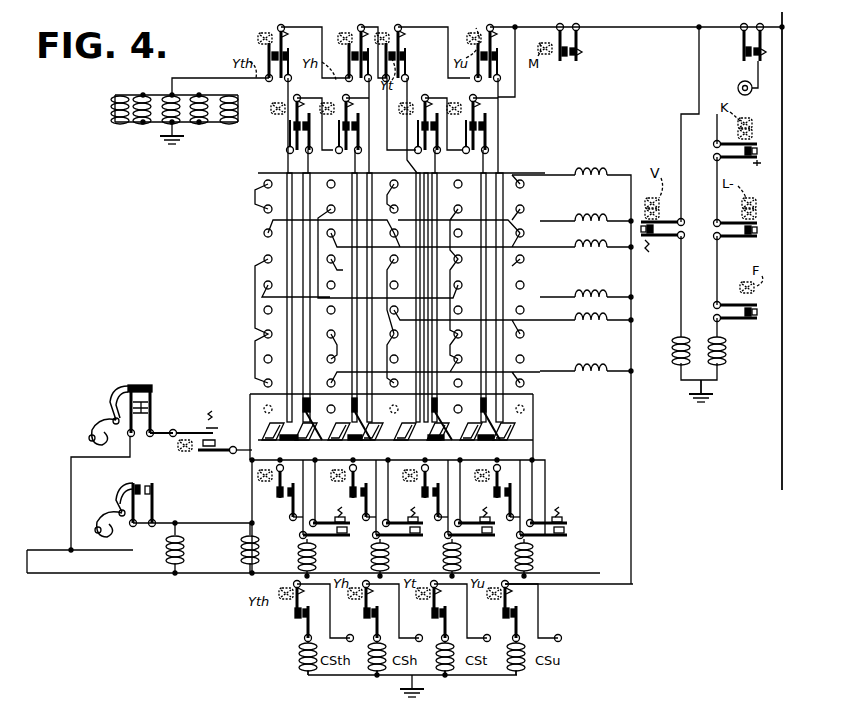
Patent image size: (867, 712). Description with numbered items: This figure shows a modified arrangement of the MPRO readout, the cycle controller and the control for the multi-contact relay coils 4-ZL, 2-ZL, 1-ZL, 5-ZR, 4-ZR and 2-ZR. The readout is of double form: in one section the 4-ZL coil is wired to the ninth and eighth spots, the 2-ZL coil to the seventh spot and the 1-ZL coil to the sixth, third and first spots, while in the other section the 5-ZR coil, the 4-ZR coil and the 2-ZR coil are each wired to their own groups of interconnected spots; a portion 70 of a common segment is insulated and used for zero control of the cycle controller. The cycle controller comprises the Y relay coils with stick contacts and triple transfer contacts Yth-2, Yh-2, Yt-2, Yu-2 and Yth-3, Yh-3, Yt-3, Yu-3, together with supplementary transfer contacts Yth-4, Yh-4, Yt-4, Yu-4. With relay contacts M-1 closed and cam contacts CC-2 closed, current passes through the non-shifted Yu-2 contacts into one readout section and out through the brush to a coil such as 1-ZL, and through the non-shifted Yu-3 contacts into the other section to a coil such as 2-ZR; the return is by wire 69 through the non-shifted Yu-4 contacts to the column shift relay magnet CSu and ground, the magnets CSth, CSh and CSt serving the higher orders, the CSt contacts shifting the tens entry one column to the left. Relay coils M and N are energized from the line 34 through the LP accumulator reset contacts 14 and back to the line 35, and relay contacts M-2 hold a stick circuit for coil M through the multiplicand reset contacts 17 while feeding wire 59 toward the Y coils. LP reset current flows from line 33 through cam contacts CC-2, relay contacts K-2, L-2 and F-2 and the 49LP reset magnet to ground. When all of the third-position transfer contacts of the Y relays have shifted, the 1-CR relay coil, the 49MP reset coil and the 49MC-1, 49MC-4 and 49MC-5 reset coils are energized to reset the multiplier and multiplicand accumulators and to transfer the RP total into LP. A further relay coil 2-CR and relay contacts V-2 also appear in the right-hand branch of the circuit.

The multiplicand reset contacts 17 is at (144, 414).
The reset contacts of the LP accumulator 14 is at (144, 497).
The line 33 is at (782, 106).
The side of the D.C. line 34 is at (38, 548).
The other side of the D.C. line 35 is at (46, 582).
The wire 59 is at (525, 452).
The wire 69 is at (590, 584).
The insulated portion of common segment 70 is at (308, 405).
The reset coil 49MC-1 is at (115, 108).
The reset coil 49MC-4 is at (140, 118).
The reset coil 49MC-5 is at (185, 122).
The reset coil 49MP is at (209, 118).
The reset magnet 49LP is at (720, 356).
The relay coil 1-CR is at (232, 114).
The relay coil 2-CR is at (672, 360).
The relay coil M is at (240, 550).
The relay coil N is at (165, 558).
The relay contacts M-1 is at (564, 62).
The relay contacts M-2 is at (222, 451).
The cam contacts CC-2 is at (743, 53).
The relay contacts K-2 is at (722, 150).
The relay contacts L-2 is at (747, 238).
The relay contacts F-2 is at (758, 320).
The relay contact V-2 is at (668, 244).
The relay coil 4-ZL is at (594, 167).
The relay coil 2-ZL is at (596, 212).
The relay coil 1-ZL is at (586, 246).
The relay coil 5-ZR is at (598, 290).
The relay coil 4-ZR is at (596, 324).
The relay coil 2-ZR is at (600, 376).
The transfer contacts Yth-2 is at (290, 47).
The transfer contacts Yh-2 is at (355, 47).
The transfer contacts Yt-2 is at (402, 47).
The transfer contacts Yu-2 is at (489, 47).
The transfer contacts Yth-3 is at (301, 118).
The transfer contacts Yh-3 is at (343, 150).
The transfer contacts Yt-3 is at (421, 117).
The transfer contacts Yu-3 is at (482, 118).
The supplementary transfer contacts Yth-4 is at (298, 618).
The supplementary transfer contacts Yh-4 is at (372, 620).
The supplementary transfer contacts Yt-4 is at (436, 620).
The supplementary transfer contacts Yu-4 is at (506, 618).
The column shift relay magnet CSth is at (304, 511).
The column shift relay magnet CSh is at (377, 511).
The column shift relay magnet CSt is at (443, 511).
The column shift relay magnet CSu is at (516, 511).